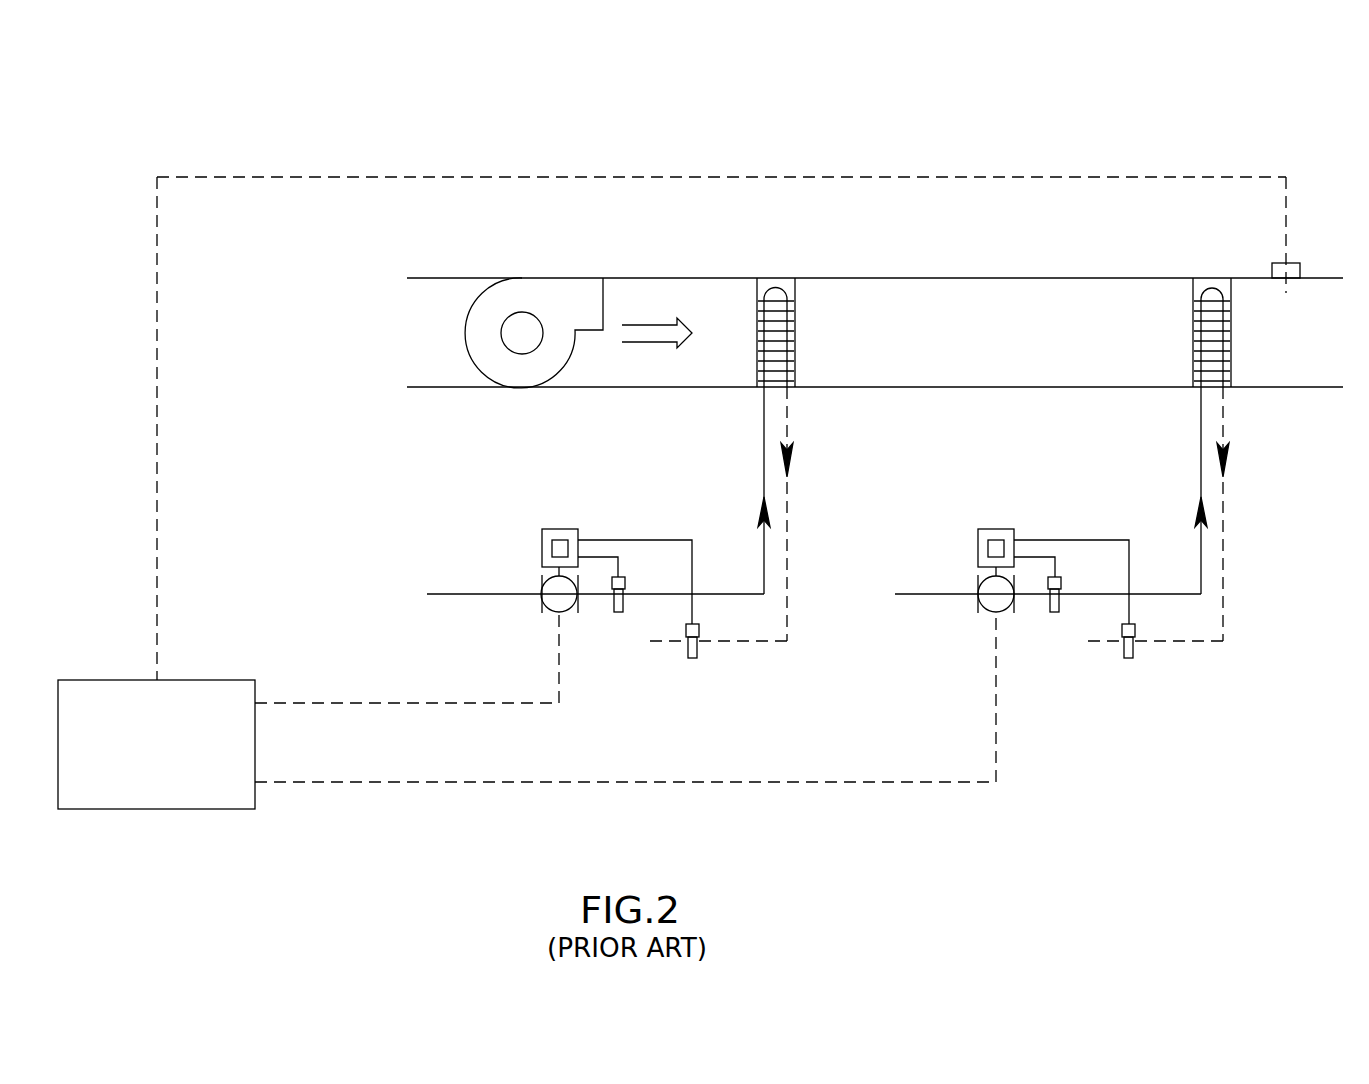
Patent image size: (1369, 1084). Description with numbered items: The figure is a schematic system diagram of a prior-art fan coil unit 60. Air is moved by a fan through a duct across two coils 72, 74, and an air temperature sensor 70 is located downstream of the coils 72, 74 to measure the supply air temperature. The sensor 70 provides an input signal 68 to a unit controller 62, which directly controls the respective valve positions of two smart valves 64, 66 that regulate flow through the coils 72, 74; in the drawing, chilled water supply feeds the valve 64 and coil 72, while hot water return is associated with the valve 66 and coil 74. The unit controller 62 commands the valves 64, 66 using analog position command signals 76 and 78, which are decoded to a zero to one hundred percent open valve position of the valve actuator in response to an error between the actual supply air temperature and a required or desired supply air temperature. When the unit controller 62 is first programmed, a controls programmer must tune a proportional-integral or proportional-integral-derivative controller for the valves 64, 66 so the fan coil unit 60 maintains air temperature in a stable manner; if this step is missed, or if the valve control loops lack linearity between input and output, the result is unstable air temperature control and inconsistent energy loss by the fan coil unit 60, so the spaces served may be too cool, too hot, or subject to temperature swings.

The fan coil unit 60 is at (997, 102).
The unit controller 62 is at (118, 680).
The smart valve 64 is at (541, 550).
The smart valve 66 is at (977, 550).
The input signal 68 is at (318, 176).
The air temperature sensor 70 is at (1300, 263).
The coil 72 is at (769, 273).
The coil 74 is at (1205, 273).
The analog position command signal 76 is at (561, 676).
The analog position command signal 78 is at (997, 684).